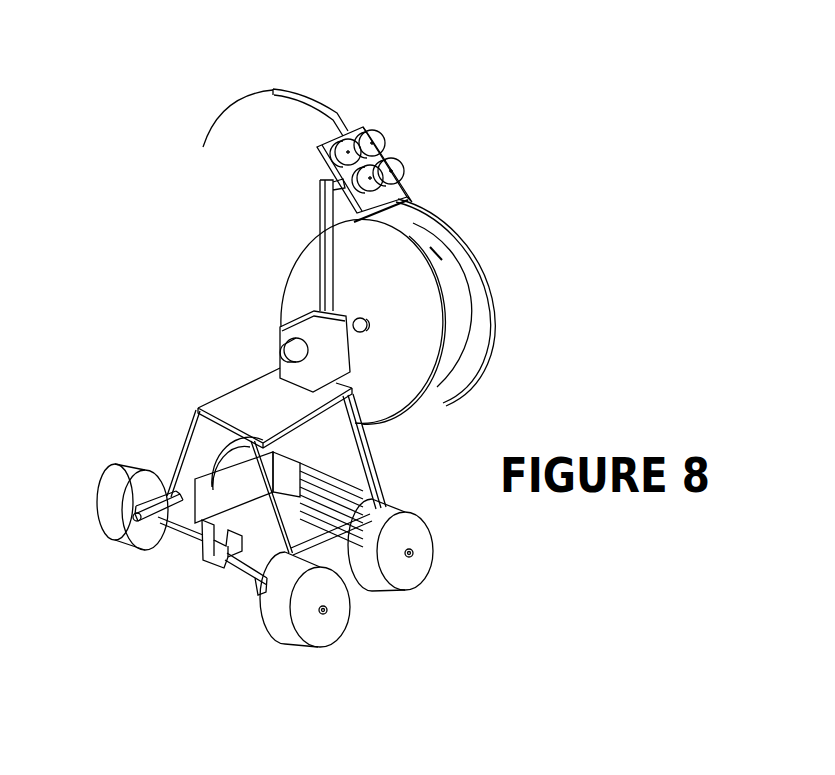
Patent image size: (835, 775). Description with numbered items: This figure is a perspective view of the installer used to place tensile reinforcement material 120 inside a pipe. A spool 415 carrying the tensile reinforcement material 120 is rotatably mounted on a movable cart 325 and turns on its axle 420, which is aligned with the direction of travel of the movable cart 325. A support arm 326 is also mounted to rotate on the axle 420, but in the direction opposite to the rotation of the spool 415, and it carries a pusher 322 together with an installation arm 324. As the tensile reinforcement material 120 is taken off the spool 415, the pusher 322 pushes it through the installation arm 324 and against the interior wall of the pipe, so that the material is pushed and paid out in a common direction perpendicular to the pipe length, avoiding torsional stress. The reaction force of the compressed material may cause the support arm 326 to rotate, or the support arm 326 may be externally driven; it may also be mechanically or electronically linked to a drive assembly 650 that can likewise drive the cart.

The tensile reinforcement material 120 is at (413, 211).
The spool 415 is at (480, 272).
The axle 420 is at (367, 330).
The pusher 322 is at (390, 163).
The installation arm 324 is at (343, 118).
The support arm 326 is at (323, 267).
The movable cart 325 is at (279, 548).
The drive assembly 650 is at (213, 485).